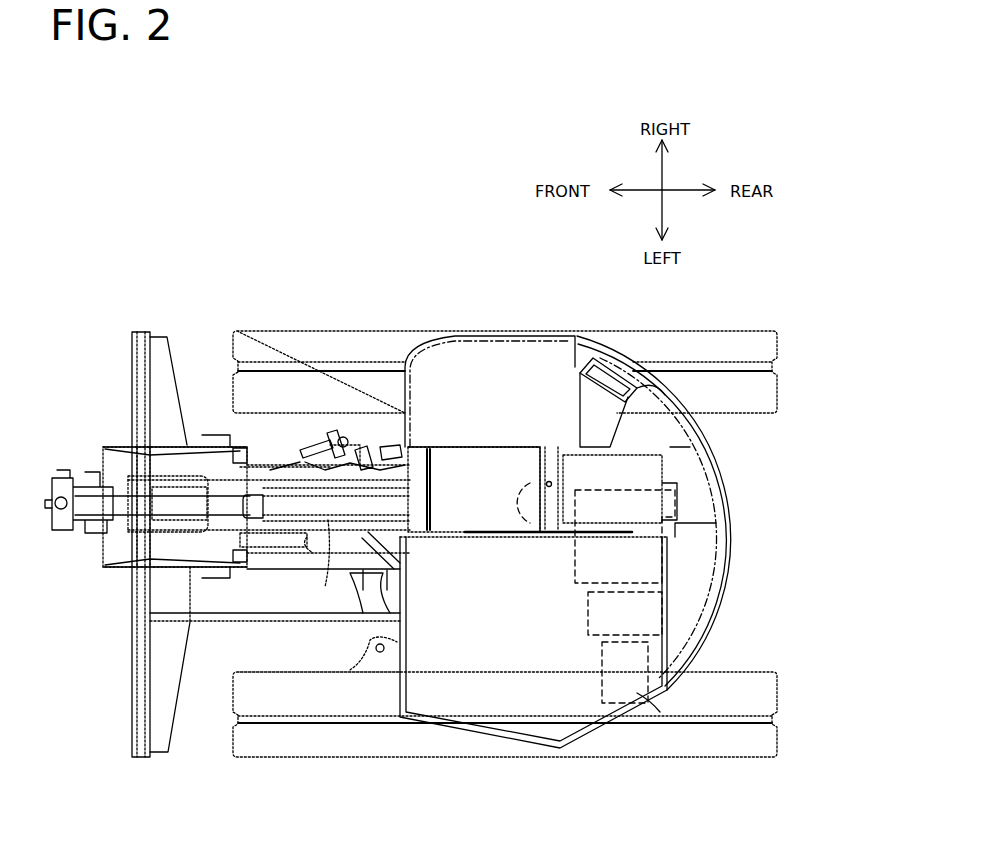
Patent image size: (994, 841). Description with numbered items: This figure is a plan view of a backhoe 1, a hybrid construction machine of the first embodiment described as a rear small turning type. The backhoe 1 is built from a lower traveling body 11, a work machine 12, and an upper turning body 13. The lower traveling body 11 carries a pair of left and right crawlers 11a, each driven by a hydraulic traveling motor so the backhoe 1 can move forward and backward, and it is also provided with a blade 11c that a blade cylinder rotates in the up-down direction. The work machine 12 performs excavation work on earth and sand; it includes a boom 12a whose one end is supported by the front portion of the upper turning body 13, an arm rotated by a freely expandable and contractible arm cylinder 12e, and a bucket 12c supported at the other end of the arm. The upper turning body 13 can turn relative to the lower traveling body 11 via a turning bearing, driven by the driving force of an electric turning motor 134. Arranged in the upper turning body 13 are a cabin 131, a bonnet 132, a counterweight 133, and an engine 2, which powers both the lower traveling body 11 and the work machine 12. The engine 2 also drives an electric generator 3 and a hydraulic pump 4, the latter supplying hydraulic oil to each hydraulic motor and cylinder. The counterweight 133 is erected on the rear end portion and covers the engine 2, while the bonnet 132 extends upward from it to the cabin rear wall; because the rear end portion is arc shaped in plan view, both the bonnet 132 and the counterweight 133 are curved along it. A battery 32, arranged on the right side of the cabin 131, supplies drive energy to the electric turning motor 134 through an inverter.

The backhoe 1 is at (331, 270).
The lower traveling body 11 is at (235, 323).
The crawler 11a is at (298, 329).
The blade 11c is at (135, 730).
The work machine 12 is at (92, 555).
The boom 12a is at (273, 482).
The bucket 12c is at (122, 443).
The arm cylinder 12e is at (331, 518).
The upper turning body 13 is at (752, 552).
The cabin 131 is at (418, 728).
The bonnet 132 is at (712, 483).
The counterweight 133 is at (724, 502).
The electric turning motor 134 is at (520, 537).
The battery 32 is at (456, 457).
The engine 2 is at (572, 573).
The electric generator 3 is at (590, 607).
The hydraulic pump 4 is at (607, 670).